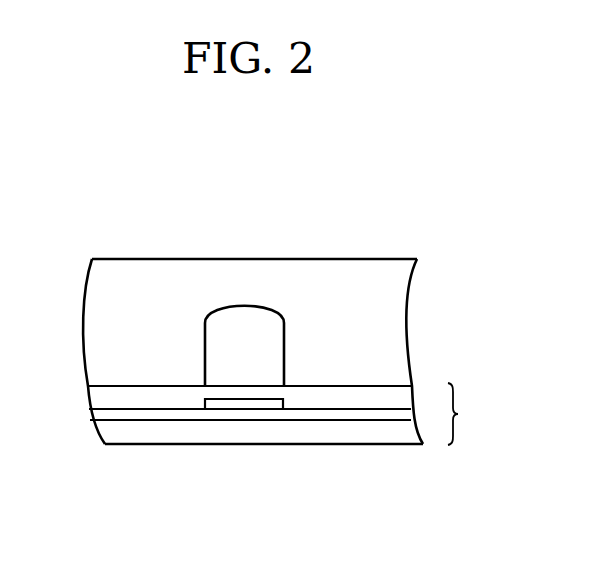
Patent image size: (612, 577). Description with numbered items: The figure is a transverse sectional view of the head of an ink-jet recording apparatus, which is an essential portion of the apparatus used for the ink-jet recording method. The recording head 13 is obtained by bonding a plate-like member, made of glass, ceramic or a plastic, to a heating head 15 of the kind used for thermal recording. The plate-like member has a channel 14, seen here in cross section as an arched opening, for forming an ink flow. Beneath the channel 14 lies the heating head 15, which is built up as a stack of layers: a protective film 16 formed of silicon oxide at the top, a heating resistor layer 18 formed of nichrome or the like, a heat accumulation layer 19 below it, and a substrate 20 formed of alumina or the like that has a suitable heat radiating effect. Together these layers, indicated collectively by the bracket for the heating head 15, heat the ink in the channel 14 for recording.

The recording head 13 is at (118, 258).
The channel 14 is at (258, 302).
The heating head 15 is at (471, 414).
The protective film 16 is at (293, 402).
The heating resistor layer 18 is at (227, 403).
The heat accumulation layer 19 is at (338, 417).
The substrate 20 is at (393, 433).